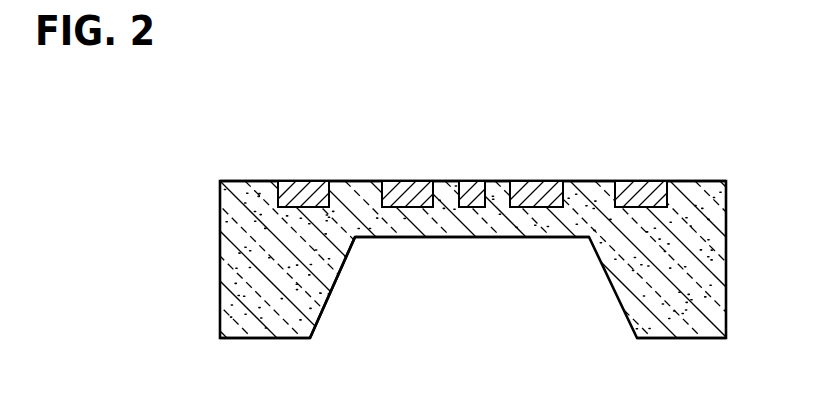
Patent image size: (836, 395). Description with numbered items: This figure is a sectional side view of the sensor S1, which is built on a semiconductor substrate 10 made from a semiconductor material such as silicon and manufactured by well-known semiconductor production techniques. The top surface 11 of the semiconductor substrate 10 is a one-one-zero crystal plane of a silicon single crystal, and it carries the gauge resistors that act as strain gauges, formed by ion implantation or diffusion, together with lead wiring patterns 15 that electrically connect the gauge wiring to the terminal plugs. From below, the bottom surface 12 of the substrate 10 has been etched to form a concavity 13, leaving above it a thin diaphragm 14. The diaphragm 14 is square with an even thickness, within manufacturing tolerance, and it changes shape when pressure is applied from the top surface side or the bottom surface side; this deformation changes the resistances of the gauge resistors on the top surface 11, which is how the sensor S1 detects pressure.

The sensor S1 is at (251, 104).
The semiconductor substrate 10 is at (710, 242).
The top surface 11 is at (705, 177).
The bottom surface 12 is at (695, 339).
The concavity 13 is at (335, 281).
The diaphragm 14 is at (535, 238).
The lead wiring patterns 15 is at (473, 181).